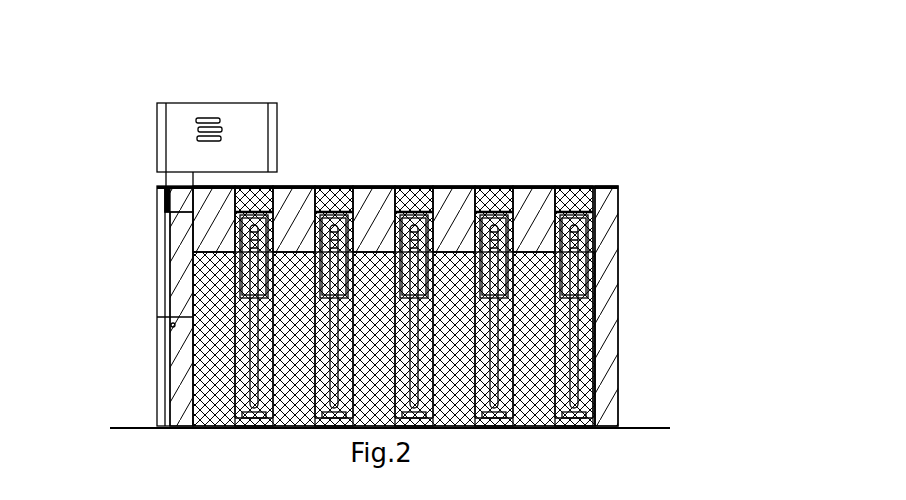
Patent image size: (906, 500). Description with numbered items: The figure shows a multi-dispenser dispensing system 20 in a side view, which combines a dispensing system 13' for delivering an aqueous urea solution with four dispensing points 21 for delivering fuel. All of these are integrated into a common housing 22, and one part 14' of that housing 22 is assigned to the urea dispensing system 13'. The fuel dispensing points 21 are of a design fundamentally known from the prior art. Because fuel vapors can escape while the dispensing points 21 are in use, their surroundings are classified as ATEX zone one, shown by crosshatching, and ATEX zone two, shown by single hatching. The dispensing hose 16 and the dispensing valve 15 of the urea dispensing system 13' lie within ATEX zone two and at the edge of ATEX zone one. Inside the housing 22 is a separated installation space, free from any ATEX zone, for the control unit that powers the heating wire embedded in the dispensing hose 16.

The multi-dispenser dispensing system 20 is at (477, 222).
The dispensing point 21 is at (415, 255).
The common housing 22 is at (110, 288).
The dispensing system 13' is at (412, 136).
The part of the housing 14' is at (654, 282).
The dispensing valve 15 is at (662, 308).
The dispensing hose 16 is at (475, 306).